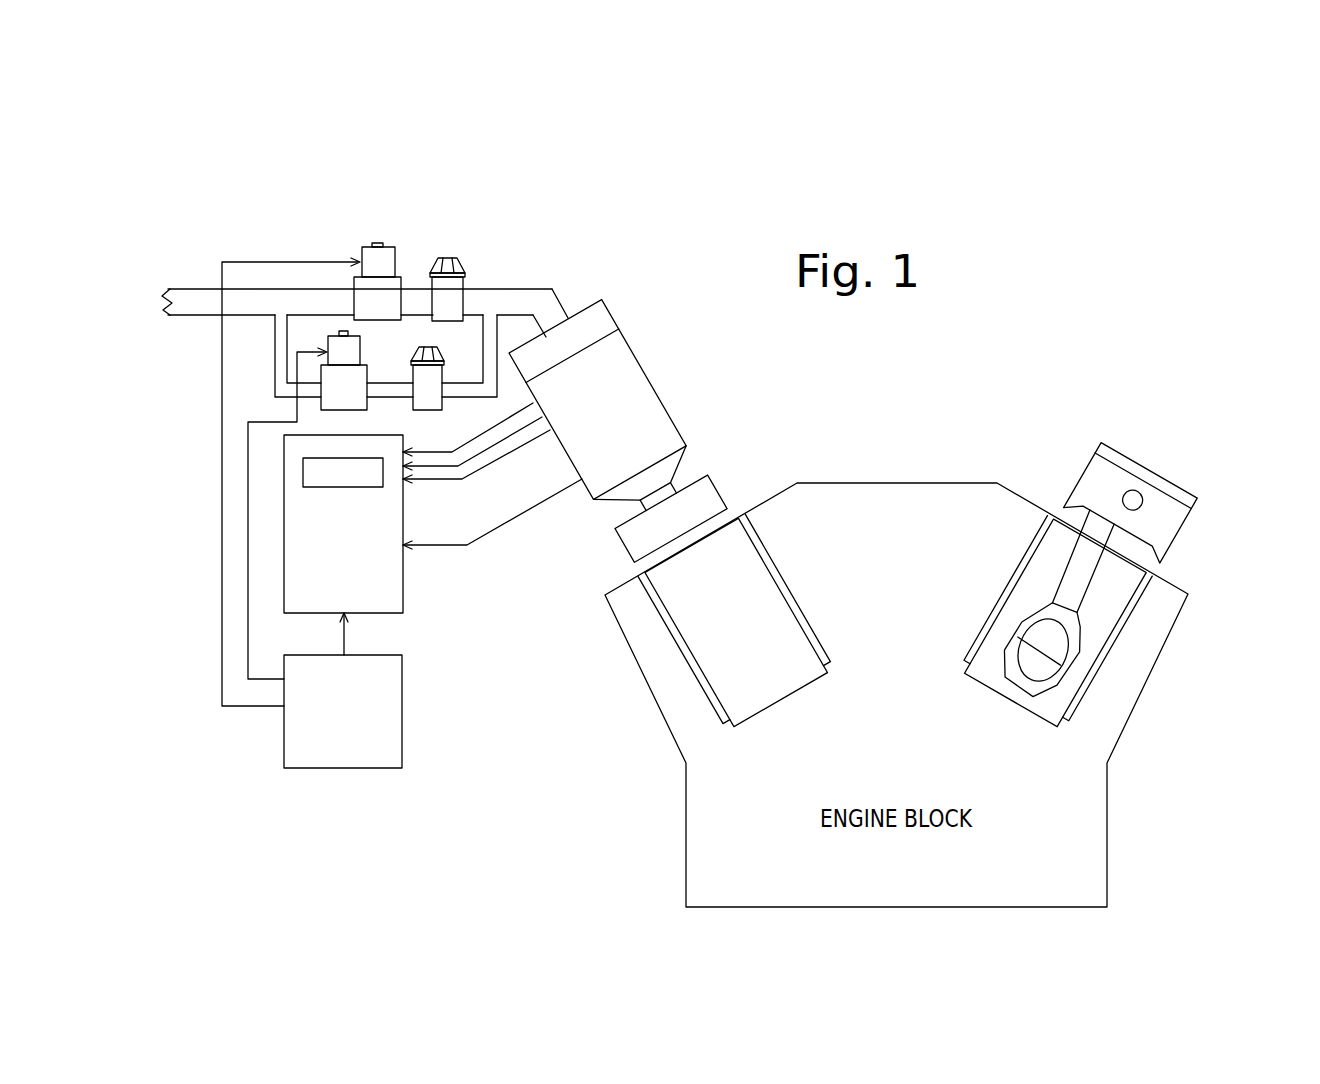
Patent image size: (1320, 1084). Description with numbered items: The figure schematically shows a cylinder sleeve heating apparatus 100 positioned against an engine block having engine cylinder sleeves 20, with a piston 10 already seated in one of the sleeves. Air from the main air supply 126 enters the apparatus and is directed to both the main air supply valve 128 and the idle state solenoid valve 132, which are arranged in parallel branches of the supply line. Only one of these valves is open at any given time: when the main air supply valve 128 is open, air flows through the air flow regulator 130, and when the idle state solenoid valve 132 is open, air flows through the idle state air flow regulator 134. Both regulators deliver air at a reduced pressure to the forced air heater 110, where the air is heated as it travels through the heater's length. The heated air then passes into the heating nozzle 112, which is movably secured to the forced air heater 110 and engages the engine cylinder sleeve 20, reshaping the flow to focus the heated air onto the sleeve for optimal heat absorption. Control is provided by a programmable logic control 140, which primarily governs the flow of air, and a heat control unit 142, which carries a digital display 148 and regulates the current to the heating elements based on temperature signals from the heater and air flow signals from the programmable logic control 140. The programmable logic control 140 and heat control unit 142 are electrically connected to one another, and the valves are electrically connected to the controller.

The heating apparatus 100 is at (319, 187).
The main air supply 126 is at (205, 302).
The main air supply valve 128 is at (383, 260).
The air flow regulator 130 is at (445, 292).
The idle state solenoid valve 132 is at (332, 397).
The idle state air flow regulator 134 is at (440, 355).
The heat control unit 142 is at (382, 585).
The digital display 148 is at (327, 471).
The programmable logic control 140 is at (305, 744).
The forced air heater 110 is at (660, 388).
The heating nozzle 112 is at (718, 488).
The engine cylinder sleeve 20 is at (680, 597).
The piston 10 is at (1121, 480).